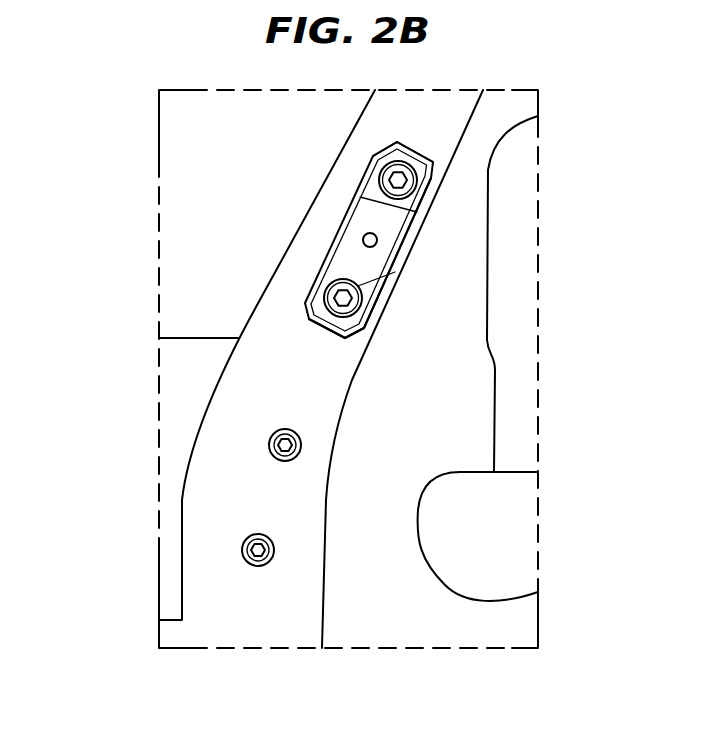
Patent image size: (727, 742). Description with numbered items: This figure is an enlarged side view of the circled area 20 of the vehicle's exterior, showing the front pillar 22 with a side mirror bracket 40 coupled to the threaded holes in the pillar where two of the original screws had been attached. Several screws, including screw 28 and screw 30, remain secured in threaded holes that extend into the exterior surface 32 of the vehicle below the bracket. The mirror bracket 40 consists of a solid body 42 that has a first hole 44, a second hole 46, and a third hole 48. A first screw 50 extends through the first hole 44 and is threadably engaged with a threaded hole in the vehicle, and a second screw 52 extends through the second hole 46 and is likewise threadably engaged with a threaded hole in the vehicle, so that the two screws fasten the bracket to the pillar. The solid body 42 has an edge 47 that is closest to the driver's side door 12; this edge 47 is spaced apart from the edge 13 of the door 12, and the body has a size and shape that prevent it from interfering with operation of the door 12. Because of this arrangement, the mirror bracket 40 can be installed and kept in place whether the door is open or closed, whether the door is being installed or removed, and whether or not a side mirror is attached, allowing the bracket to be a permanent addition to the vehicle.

The driver's side door 12 is at (505, 113).
The edge of the door 13 is at (350, 382).
The circled area 20 is at (104, 160).
The front pillar 22 is at (360, 117).
The screw 28 is at (273, 427).
The screw 30 is at (246, 538).
The exterior surface 32 is at (275, 321).
The side mirror bracket 40 is at (308, 223).
The solid body 42 is at (414, 145).
The first hole 44 is at (378, 322).
The second hole 46 is at (415, 189).
The edge 47 is at (396, 273).
The third hole 48 is at (378, 240).
The first screw 50 is at (326, 287).
The second screw 52 is at (375, 163).